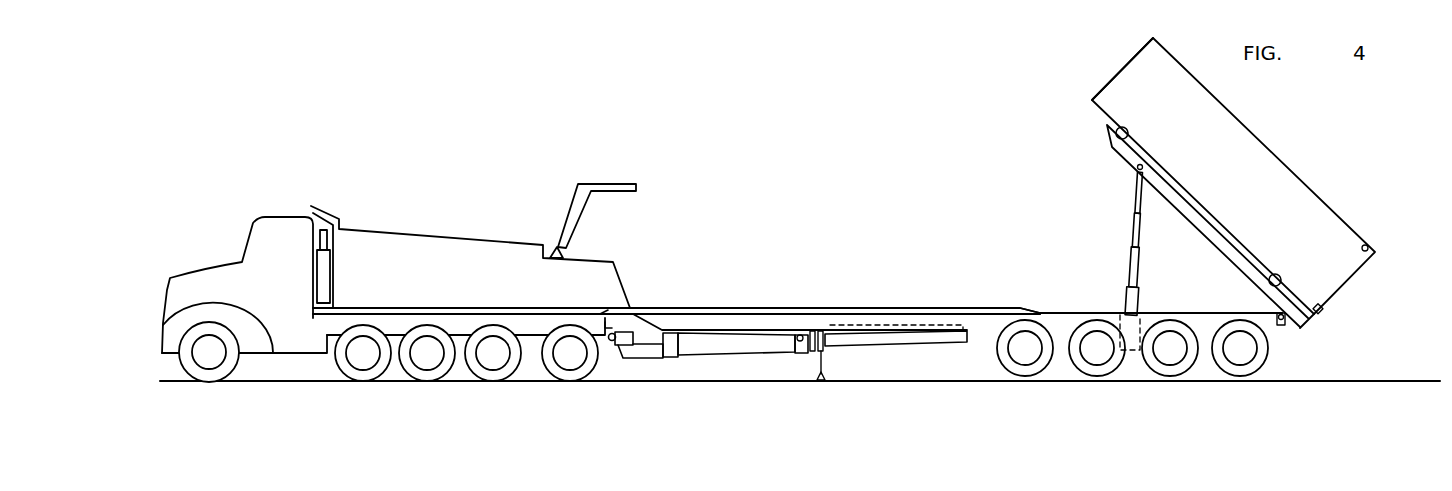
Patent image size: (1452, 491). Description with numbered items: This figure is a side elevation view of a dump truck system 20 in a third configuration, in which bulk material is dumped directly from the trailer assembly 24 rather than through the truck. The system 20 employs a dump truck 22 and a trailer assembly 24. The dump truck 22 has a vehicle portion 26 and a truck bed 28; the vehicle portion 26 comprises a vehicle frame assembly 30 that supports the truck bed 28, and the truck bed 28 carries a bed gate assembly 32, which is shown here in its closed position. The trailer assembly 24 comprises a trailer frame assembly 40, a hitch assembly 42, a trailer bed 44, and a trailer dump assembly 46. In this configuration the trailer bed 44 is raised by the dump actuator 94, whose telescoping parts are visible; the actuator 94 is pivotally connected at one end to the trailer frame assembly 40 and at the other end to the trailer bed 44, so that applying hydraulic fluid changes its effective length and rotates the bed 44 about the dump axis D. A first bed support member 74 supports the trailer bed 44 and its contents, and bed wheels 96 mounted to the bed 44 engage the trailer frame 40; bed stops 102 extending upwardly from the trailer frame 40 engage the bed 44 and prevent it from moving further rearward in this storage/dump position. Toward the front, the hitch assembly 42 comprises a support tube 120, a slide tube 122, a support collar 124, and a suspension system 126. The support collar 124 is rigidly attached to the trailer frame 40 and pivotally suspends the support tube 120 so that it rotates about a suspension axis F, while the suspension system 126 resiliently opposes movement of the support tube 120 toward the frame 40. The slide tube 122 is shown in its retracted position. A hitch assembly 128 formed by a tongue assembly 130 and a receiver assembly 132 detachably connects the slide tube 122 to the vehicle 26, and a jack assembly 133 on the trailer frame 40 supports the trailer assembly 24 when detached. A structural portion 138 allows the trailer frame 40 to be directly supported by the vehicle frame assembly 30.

The dump truck system 20 is at (1285, 115).
The dump truck 22 is at (675, 213).
The trailer assembly 24 is at (834, 205).
The vehicle portion 26 is at (217, 230).
The truck bed 28 is at (380, 221).
The vehicle frame assembly 30 is at (532, 379).
The bed gate assembly 32 is at (635, 168).
The trailer frame assembly 40 is at (903, 285).
The hitch assembly 42 is at (715, 373).
The trailer bed 44 is at (1114, 63).
The trailer dump assembly 46 is at (1079, 260).
The first bed support member 74 is at (1218, 246).
The dump actuator 94 is at (1117, 272).
The bed wheels 96 is at (1128, 128).
The bed stops 102 is at (1312, 312).
The support tube 120 is at (783, 358).
The slide tube 122 is at (897, 345).
The support collar 124 is at (800, 340).
The suspension system 126 is at (688, 373).
The hitch assembly 128 is at (624, 375).
The tongue assembly 130 is at (643, 320).
The receiver assembly 132 is at (609, 375).
The jack assembly 133 is at (843, 356).
The structural portion 138 is at (608, 310).
The dump axis D is at (1283, 327).
The suspension axis F is at (790, 332).